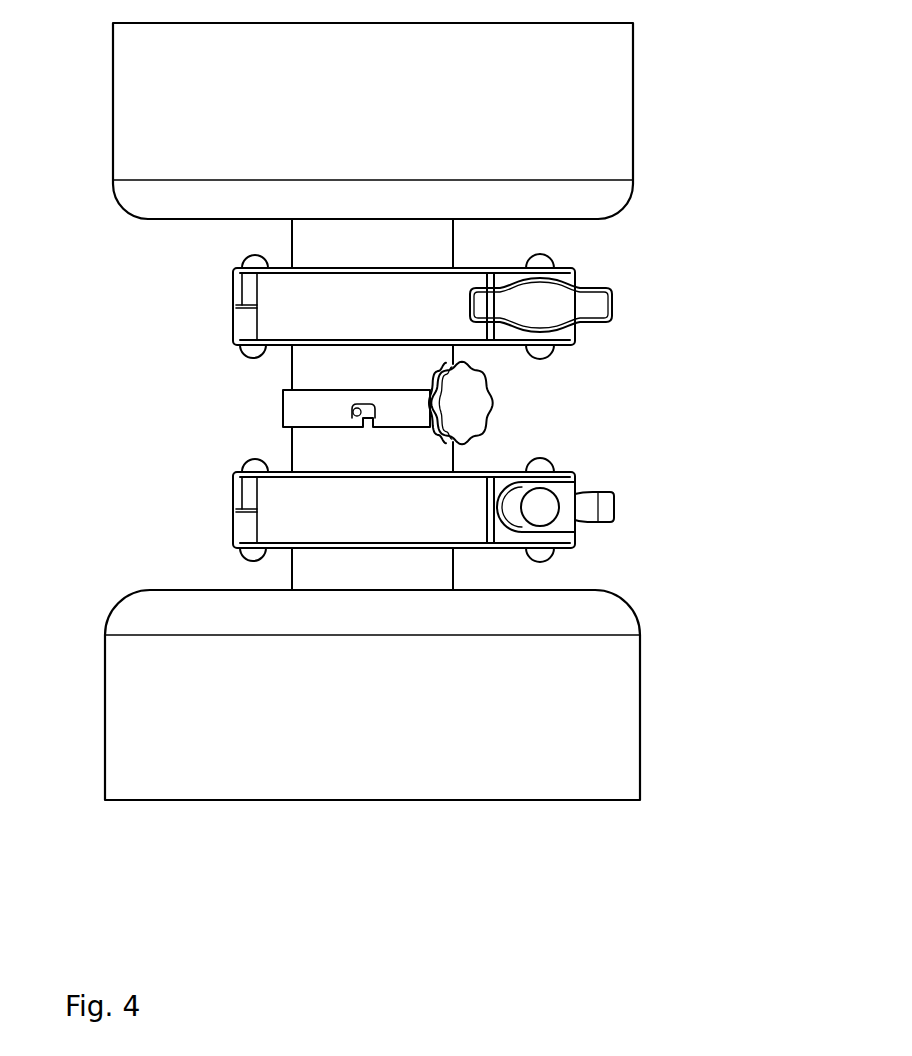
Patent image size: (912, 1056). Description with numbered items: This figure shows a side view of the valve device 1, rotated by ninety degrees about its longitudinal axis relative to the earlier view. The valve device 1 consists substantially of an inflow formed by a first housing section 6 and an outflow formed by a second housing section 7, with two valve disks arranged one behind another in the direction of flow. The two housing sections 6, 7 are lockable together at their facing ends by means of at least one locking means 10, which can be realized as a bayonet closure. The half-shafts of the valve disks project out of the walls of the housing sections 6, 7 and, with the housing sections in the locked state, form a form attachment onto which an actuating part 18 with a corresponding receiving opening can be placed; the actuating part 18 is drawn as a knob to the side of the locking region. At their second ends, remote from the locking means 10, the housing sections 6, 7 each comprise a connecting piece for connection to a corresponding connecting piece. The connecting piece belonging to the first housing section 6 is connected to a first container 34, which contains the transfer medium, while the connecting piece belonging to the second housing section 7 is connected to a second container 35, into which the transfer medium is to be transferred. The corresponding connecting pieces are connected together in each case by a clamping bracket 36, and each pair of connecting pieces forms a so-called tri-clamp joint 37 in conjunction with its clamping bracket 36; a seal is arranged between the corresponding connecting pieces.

The valve device 1 is at (212, 403).
The first housing section 6 is at (316, 367).
The second housing section 7 is at (318, 442).
The locking means 10 is at (340, 413).
The actuating part 18 is at (480, 398).
The first container 34 is at (595, 98).
The second container 35 is at (605, 675).
The clamping bracket 36 is at (280, 318).
The tri-clamp joint 37 is at (200, 303).